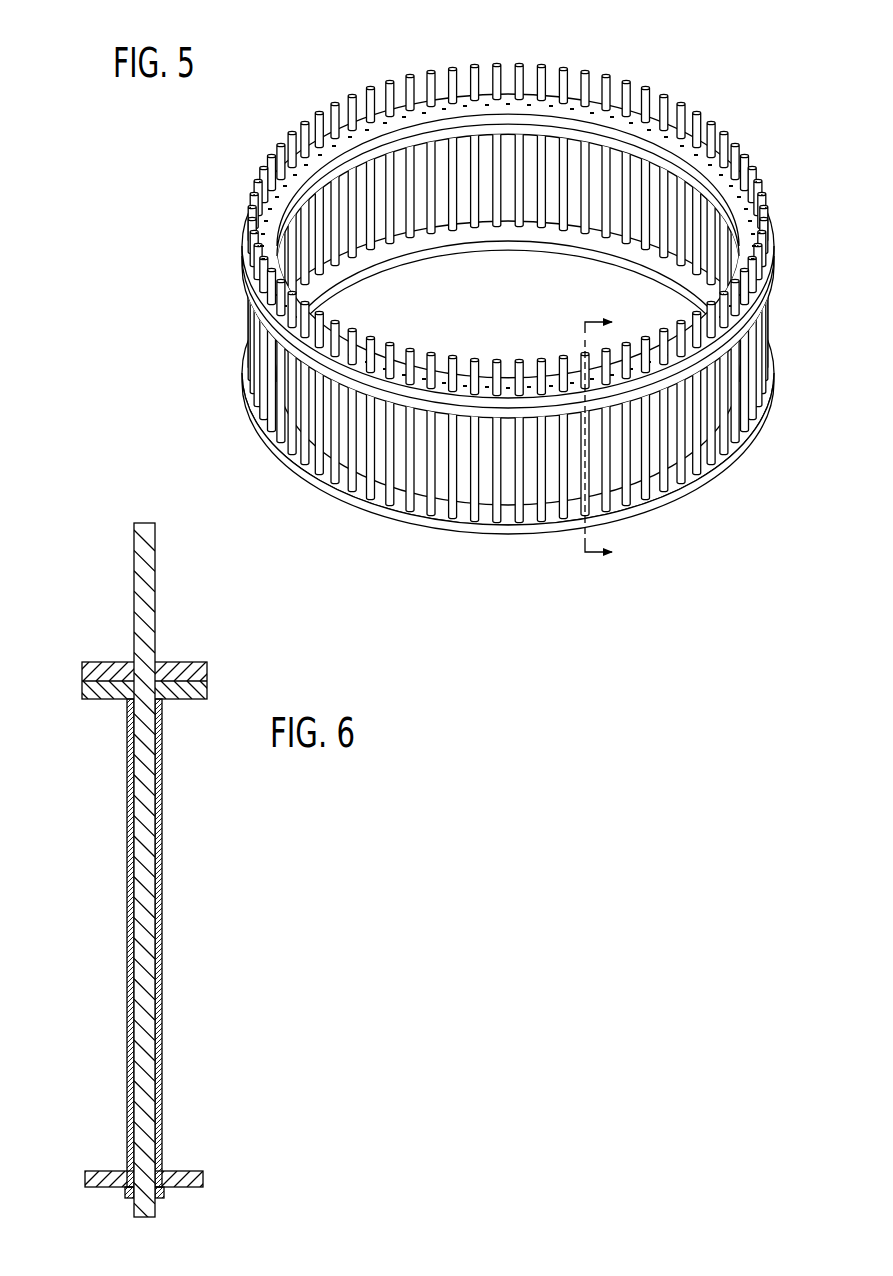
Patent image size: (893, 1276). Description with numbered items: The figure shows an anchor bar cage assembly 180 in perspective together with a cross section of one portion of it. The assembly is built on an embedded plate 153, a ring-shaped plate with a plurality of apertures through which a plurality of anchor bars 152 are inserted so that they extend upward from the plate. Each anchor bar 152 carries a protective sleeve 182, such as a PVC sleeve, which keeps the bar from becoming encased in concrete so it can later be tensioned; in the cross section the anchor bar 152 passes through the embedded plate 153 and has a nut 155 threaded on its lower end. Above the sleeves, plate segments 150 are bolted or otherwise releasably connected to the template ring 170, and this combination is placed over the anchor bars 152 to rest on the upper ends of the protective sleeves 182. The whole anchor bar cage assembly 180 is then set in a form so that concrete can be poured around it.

In FIG. 5, the plate segments 150 is at (347, 178).
In FIG. 6, the plate segments 150 is at (107, 698).
In FIG. 5, the anchor bars 152 is at (430, 72).
In FIG. 6, the anchor bars 152 is at (143, 580).
In FIG. 5, the embedded plate 153 is at (443, 238).
In FIG. 6, the embedded plate 153 is at (103, 1175).
In FIG. 6, the nut 155 is at (130, 1197).
In FIG. 5, the template ring 170 is at (528, 105).
In FIG. 6, the template ring 170 is at (107, 667).
In FIG. 5, the anchor bar cage assembly 180 is at (674, 60).
In FIG. 6, the protective sleeve 182 is at (132, 870).